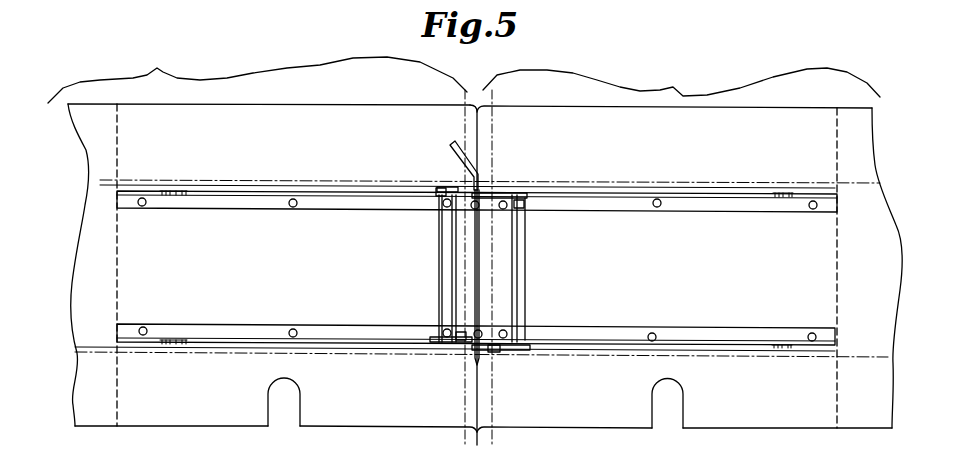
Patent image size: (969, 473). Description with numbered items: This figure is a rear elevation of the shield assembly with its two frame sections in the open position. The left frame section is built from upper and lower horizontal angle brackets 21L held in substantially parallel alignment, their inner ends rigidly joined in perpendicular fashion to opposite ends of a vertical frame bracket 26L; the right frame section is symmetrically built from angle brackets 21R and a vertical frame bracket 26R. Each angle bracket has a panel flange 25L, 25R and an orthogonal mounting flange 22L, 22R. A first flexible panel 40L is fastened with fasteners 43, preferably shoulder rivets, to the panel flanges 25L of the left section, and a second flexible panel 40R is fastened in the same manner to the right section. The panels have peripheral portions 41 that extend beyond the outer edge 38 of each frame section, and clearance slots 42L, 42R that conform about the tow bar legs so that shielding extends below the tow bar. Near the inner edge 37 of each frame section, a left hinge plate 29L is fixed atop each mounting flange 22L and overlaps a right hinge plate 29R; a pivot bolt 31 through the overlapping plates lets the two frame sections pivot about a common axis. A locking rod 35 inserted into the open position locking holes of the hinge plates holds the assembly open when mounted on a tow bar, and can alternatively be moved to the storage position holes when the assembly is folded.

The first flexible panel 40L is at (262, 239).
The second flexible panel 40R is at (681, 256).
The peripheral portion 41 is at (97, 218).
The left clearance slot 42L is at (282, 408).
The right clearance slot 42R is at (686, 393).
The outer edge 38 is at (117, 283).
The left horizontal angle bracket 21L is at (230, 192).
The right horizontal angle bracket 21R is at (590, 193).
The left mounting flange 22L is at (190, 193).
The right mounting flange 22R is at (755, 194).
The left panel flange 25L is at (313, 203).
The right panel flange 25R is at (738, 203).
The fasteners 43 is at (660, 200).
The left vertical frame bracket 26L is at (437, 230).
The right vertical frame bracket 26R is at (520, 292).
The pivot bolt 31 is at (485, 328).
The inner edge 37 is at (462, 280).
The left hinge plate 29L is at (436, 190).
The right hinge plate 29R is at (520, 207).
The locking rod 35 is at (468, 153).